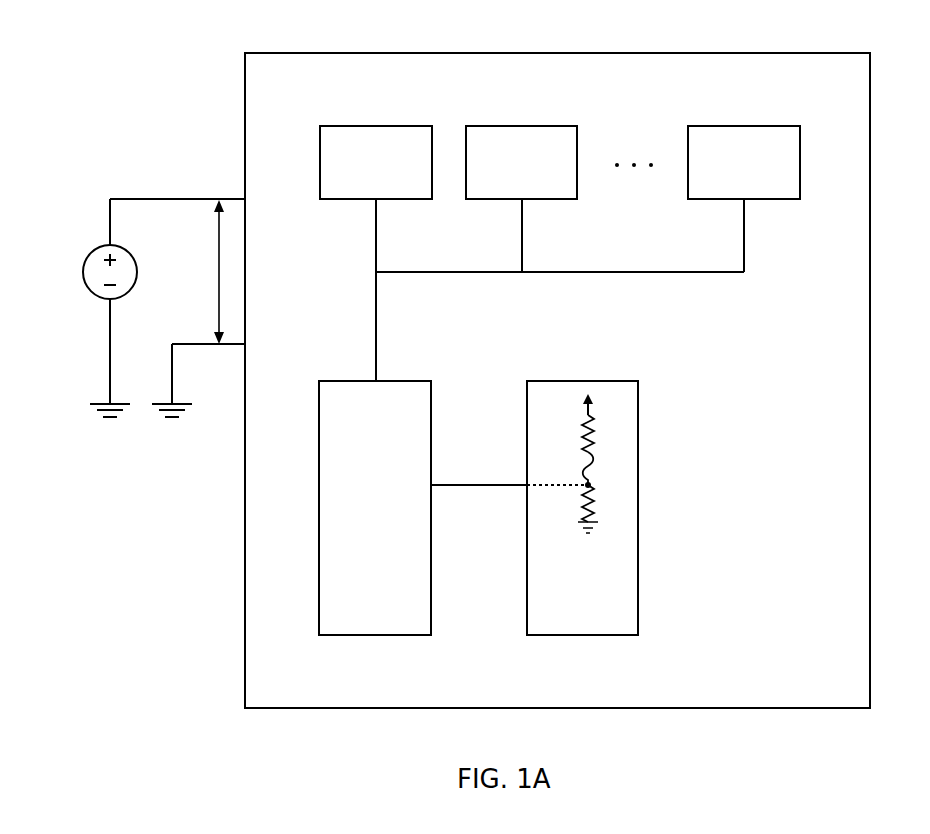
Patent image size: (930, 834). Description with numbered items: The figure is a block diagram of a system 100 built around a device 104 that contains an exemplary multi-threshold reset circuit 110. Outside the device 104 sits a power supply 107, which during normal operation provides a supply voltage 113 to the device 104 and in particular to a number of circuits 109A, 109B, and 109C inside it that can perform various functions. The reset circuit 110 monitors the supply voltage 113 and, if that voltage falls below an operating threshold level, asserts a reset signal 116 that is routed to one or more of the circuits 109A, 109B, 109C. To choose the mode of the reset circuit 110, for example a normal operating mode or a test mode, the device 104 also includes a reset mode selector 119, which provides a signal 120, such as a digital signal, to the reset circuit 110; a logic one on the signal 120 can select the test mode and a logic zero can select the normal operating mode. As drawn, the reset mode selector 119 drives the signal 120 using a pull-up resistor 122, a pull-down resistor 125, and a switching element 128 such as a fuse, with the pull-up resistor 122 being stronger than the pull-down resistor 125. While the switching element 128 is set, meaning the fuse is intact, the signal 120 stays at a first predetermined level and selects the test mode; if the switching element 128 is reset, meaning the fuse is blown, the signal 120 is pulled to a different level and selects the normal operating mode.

The system 100 is at (150, 126).
The device 104 is at (650, 708).
The power supply 107 is at (100, 394).
The circuit 109A is at (350, 126).
The circuit 109B is at (550, 126).
The circuit 109C is at (782, 126).
The multi-threshold reset circuit 110 is at (375, 635).
The supply voltage 113 is at (218, 270).
The reset signal 116 is at (612, 272).
The reset mode selector 119 is at (575, 635).
The signal 120 is at (491, 486).
The pull-up resistor 122 is at (612, 425).
The pull-down resistor 125 is at (612, 502).
The switching element 128 is at (612, 461).